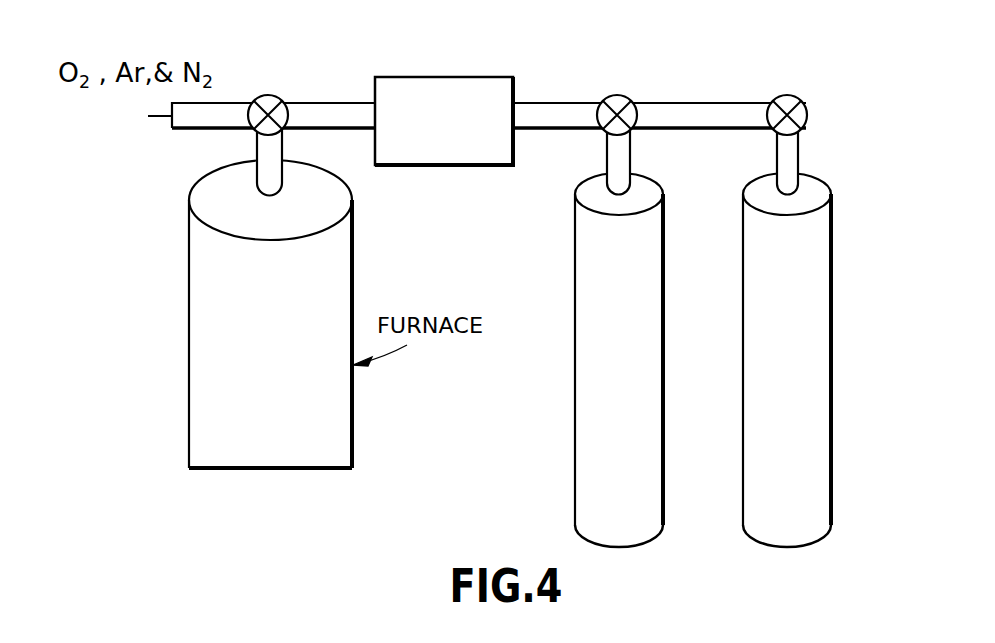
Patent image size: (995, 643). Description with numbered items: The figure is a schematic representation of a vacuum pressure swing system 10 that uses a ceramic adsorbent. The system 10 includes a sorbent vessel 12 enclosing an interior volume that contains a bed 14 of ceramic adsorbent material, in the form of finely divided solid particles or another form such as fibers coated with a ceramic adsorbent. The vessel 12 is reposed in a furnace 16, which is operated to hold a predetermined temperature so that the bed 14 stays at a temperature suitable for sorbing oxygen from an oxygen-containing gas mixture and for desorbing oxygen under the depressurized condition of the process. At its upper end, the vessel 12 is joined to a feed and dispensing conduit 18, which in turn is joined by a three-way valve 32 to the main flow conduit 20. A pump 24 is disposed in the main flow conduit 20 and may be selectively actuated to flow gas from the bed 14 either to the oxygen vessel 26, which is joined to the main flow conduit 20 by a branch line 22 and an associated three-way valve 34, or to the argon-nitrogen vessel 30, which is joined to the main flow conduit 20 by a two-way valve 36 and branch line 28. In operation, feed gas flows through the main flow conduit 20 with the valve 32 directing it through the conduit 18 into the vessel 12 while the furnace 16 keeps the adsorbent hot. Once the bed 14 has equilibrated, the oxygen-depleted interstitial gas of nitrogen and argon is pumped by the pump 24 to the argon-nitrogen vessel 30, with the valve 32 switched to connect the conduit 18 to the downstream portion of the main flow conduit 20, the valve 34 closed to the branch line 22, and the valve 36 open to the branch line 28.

The vacuum pressure swing system 10 is at (220, 537).
The sorbent vessel 12 is at (218, 355).
The bed of ceramic adsorbent material 14 is at (189, 275).
The furnace 16 is at (352, 445).
The feed and dispensing conduit 18 is at (257, 145).
The main flow conduit 20 is at (231, 103).
The branch line 22 is at (629, 150).
The pump 24 is at (478, 77).
The oxygen vessel 26 is at (575, 465).
The branch line 28 is at (800, 153).
The argon-nitrogen vessel 30 is at (831, 275).
The three-way valve 32 is at (277, 98).
The three-way valve 34 is at (630, 96).
The two-way valve 36 is at (805, 100).